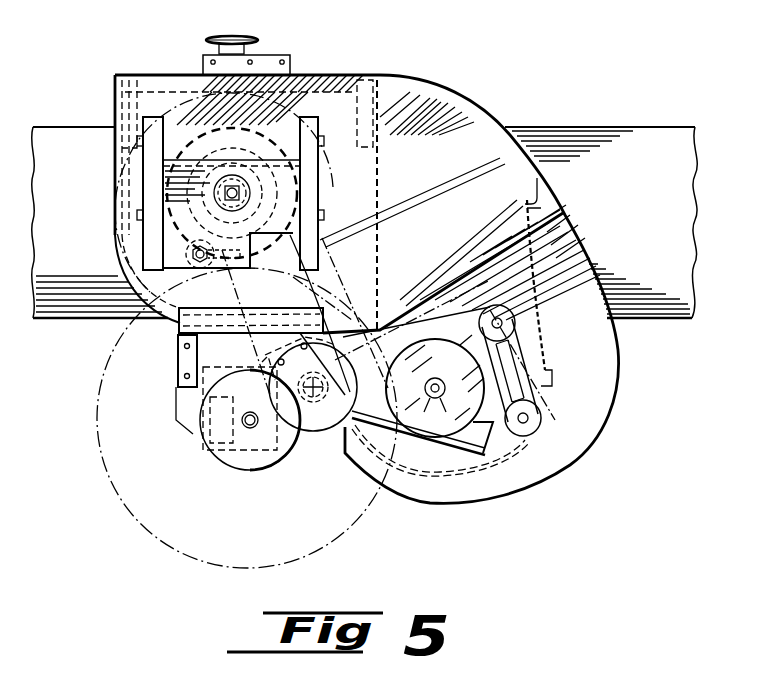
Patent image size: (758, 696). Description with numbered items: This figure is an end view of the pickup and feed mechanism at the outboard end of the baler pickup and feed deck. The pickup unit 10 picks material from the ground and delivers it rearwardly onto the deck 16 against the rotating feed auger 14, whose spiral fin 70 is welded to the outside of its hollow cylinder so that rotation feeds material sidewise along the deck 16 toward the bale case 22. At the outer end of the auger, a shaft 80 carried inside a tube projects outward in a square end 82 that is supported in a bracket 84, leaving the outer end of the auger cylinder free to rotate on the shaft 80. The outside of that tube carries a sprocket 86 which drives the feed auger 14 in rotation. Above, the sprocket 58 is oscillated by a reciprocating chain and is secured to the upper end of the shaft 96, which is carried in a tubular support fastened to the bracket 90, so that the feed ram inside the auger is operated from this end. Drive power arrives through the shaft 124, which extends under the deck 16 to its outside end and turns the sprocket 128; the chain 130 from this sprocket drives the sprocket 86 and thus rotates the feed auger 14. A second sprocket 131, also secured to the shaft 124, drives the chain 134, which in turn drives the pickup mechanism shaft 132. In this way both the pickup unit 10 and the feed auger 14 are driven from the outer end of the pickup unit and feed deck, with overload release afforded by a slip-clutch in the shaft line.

The pickup unit 10 is at (429, 482).
The feed auger 14 is at (178, 145).
The deck 16 is at (300, 293).
The bale case 22 is at (648, 222).
The sprocket 58 is at (213, 37).
The spiral fin 70 is at (337, 178).
The shaft 80 is at (222, 190).
The square end 82 is at (234, 186).
The bracket 84 is at (205, 262).
The sprocket 86 is at (227, 155).
The bracket 90 is at (285, 67).
The shaft 96 is at (234, 36).
The shaft 124 is at (312, 440).
The sprocket 128 is at (320, 436).
The chain 130 is at (298, 322).
The sprocket 131 is at (296, 440).
The pickup mechanism shaft 132 is at (447, 397).
The chain 134 is at (530, 362).